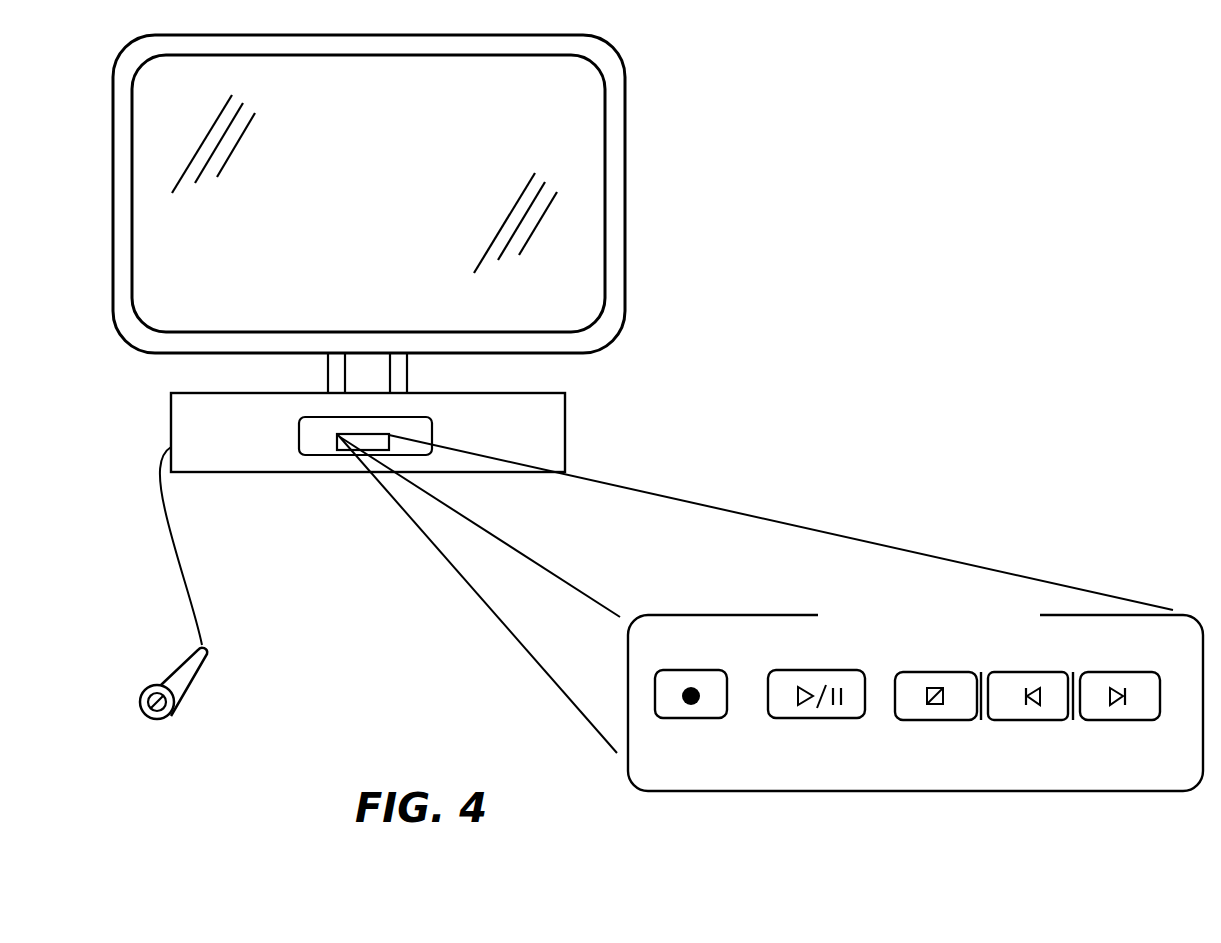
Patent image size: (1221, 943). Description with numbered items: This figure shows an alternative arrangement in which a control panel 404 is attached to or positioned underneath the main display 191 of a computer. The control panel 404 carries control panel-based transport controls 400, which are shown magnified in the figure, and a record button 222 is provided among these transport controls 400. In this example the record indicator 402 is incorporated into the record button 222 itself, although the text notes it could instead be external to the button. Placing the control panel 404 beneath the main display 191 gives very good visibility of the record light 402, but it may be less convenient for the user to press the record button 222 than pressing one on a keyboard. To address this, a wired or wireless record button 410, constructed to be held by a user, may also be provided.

The main display 191 is at (640, 195).
The control panel 404 is at (580, 440).
The wired or wireless record button 410 is at (173, 678).
The transport controls 400 is at (915, 714).
The record indicator 402 is at (693, 686).
The record button 222 is at (712, 682).